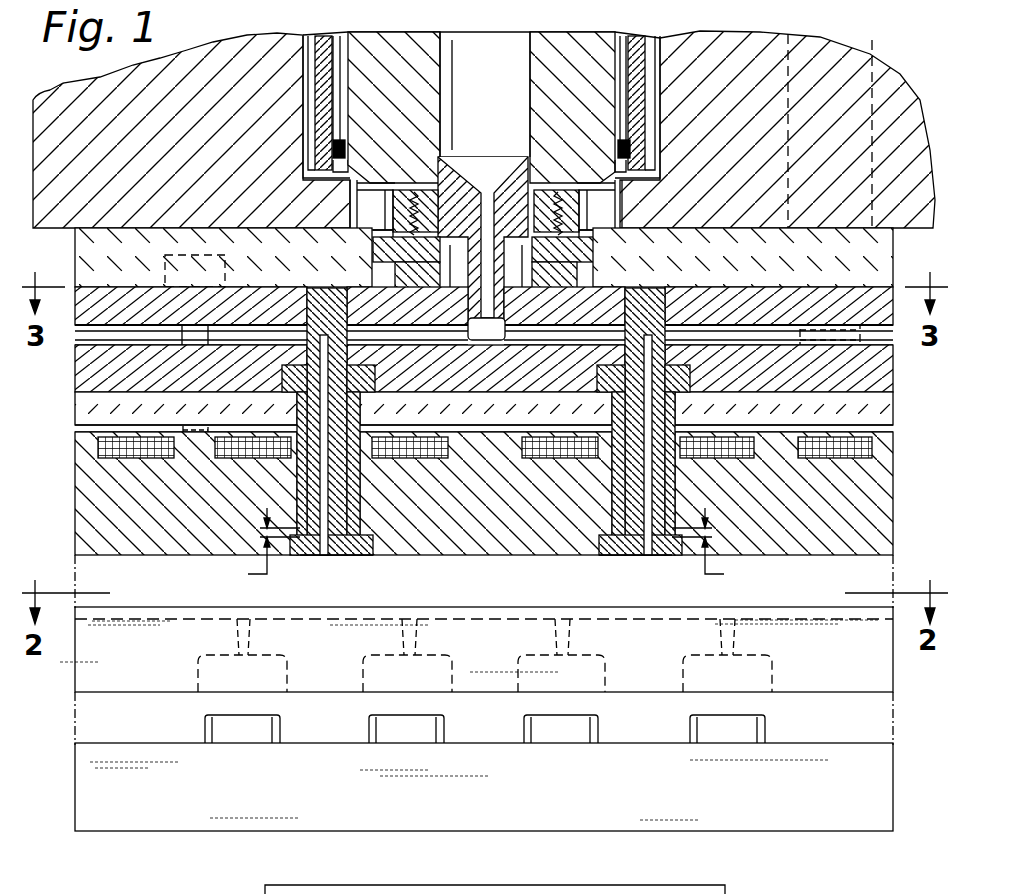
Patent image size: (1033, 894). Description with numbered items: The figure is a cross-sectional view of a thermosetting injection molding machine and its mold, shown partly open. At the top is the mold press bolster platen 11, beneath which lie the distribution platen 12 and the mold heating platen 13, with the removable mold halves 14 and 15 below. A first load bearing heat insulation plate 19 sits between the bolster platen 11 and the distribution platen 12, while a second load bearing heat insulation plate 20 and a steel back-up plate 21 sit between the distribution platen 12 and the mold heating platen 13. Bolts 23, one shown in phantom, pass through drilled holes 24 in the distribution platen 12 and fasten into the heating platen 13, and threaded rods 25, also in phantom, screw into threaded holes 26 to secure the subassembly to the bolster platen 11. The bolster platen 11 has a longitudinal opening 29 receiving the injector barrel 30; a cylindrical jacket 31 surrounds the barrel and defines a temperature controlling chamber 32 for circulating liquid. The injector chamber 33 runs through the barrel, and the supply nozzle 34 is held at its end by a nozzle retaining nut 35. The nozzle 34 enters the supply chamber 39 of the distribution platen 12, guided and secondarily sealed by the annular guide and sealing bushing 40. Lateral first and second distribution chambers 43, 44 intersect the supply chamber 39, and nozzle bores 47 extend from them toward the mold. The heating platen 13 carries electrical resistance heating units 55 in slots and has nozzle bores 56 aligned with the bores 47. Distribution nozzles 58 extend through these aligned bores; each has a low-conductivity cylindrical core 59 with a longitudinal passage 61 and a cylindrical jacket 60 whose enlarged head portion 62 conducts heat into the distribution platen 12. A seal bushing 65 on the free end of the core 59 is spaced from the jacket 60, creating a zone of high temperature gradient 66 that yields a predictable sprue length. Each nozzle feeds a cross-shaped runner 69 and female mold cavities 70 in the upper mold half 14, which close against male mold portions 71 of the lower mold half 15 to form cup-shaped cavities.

The mold press bolster platen 11 is at (72, 110).
The distribution platen 12 is at (82, 372).
The mold heating platen 13 is at (86, 510).
The upper mold half 14 is at (84, 680).
The lower mold half 15 is at (118, 826).
The first load bearing heat insulation plate 19 is at (76, 252).
The second load bearing heat insulation plate 20 is at (86, 410).
The back-up plate 21 is at (78, 446).
The bolts 23 is at (195, 256).
The drilled holes 24 is at (186, 368).
The threaded rods 25 is at (784, 152).
The threaded holes 26 is at (826, 292).
The longitudinally extending opening 29 is at (654, 42).
The injector barrel 30 is at (590, 44).
The cylindrical jacket 31 is at (324, 42).
The temperature controlling chamber 32 is at (346, 46).
The injector chamber 33 is at (506, 77).
The supply nozzle 34 is at (510, 182).
The nozzle retaining nut 35 is at (402, 192).
The supply chamber 39 is at (478, 332).
The guide and sealing bushing 40 is at (374, 272).
The first distribution chamber 43 is at (756, 336).
The second distribution chamber 44 is at (140, 334).
The nozzle bores 47 is at (300, 346).
The electrical resistance heating unit 55 is at (136, 458).
The nozzle bores 56 is at (346, 480).
The distribution nozzles 58 is at (320, 290).
The cylindrical core 59 is at (306, 304).
The cylindrical jacket 60 is at (352, 510).
The longitudinally extending passage 61 is at (320, 556).
The head portion 62 is at (374, 378).
The seal bushing 65 is at (362, 556).
The zone of high temperature gradient 66 is at (490, 549).
The cross-shaped runner 69 is at (392, 616).
The female mold cavities 70 is at (364, 664).
The male mold portions 71 is at (370, 728).